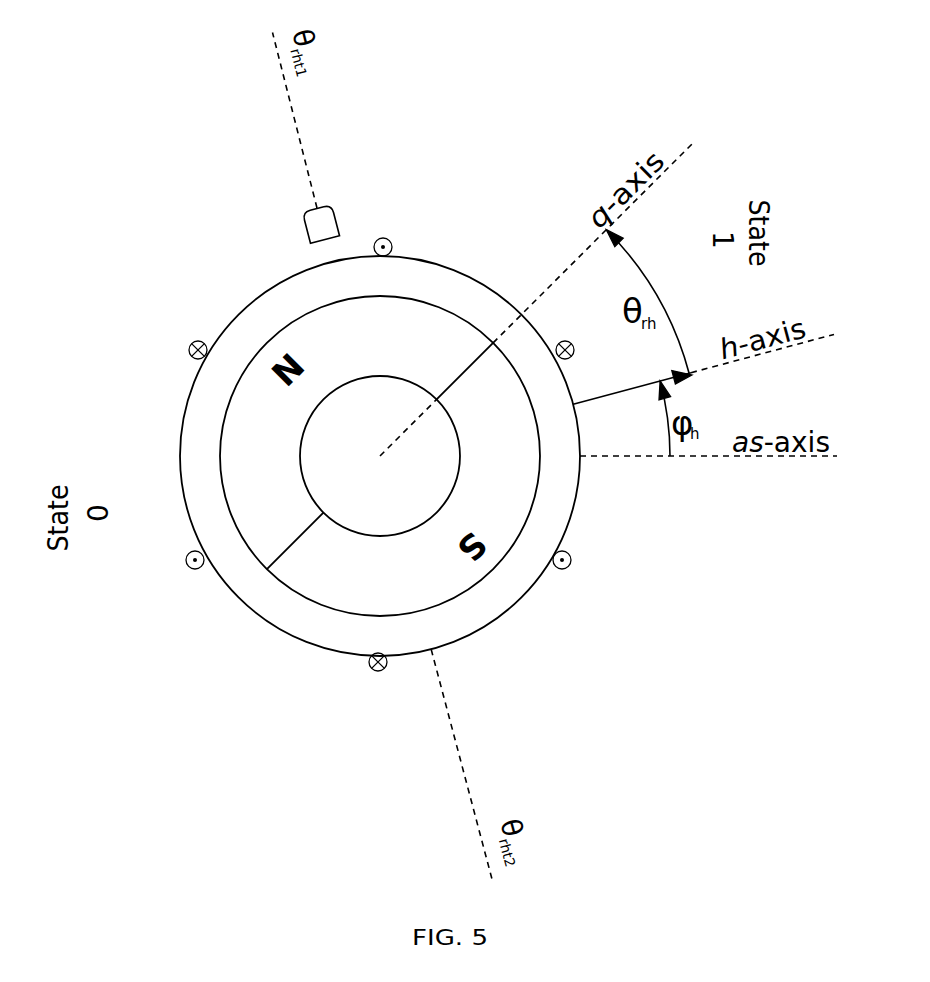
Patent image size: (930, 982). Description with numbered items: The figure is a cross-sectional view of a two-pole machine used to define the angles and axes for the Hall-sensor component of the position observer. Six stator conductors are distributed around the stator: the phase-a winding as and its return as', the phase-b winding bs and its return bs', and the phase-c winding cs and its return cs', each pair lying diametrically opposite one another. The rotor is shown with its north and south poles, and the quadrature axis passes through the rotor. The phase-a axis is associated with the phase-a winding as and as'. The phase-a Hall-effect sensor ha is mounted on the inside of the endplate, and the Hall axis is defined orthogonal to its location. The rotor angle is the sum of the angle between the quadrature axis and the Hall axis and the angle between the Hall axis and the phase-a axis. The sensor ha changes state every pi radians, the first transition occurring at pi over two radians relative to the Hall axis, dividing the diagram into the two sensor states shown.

The Hall-effect sensor ha is at (324, 206).
The phase-a stator winding as is at (380, 685).
The phase-a stator winding return as' is at (390, 232).
The phase-b stator winding bs is at (563, 336).
The phase-b stator winding return bs' is at (175, 572).
The phase-c stator winding cs is at (184, 340).
The phase-c stator winding return cs' is at (557, 584).